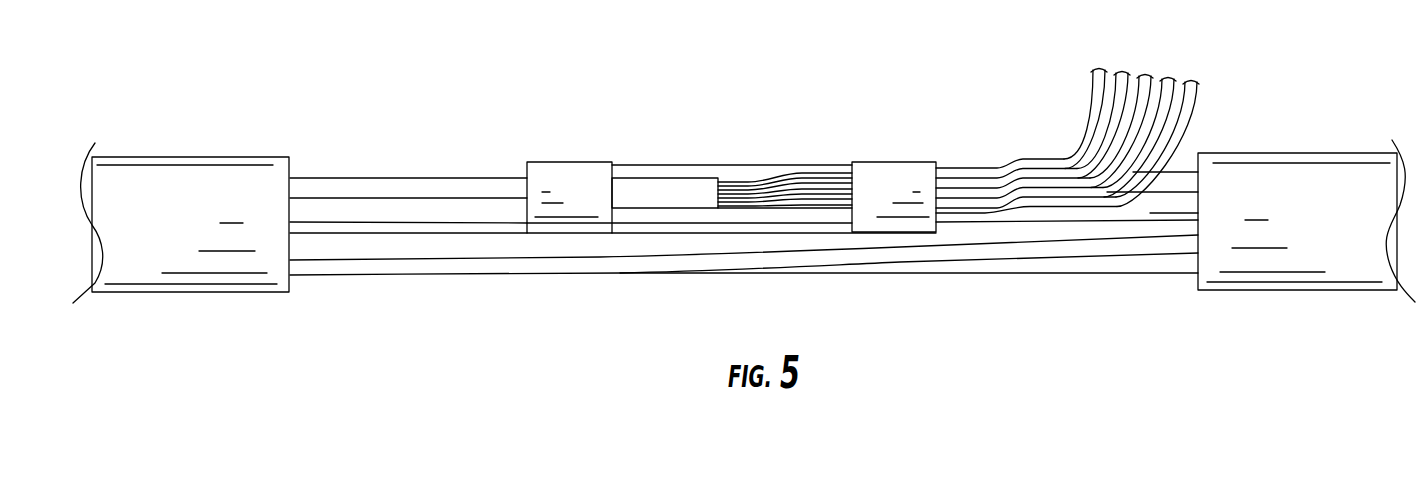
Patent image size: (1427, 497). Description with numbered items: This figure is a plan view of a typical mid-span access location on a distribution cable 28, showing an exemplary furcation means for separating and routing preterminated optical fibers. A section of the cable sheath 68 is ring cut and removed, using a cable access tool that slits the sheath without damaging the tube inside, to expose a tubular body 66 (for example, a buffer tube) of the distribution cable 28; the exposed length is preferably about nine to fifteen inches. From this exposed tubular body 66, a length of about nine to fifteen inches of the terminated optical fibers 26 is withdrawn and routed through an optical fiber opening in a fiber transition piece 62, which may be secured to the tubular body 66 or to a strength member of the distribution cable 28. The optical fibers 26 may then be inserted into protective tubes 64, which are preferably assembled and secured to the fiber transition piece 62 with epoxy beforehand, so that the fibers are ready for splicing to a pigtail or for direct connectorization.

The optical fibers 26 is at (815, 173).
The distribution cable 28 is at (228, 157).
The fiber transition piece 62 is at (580, 162).
The protective tubes 64 is at (1087, 122).
The tubular body 66 is at (422, 178).
The cable sheath 68 is at (248, 238).